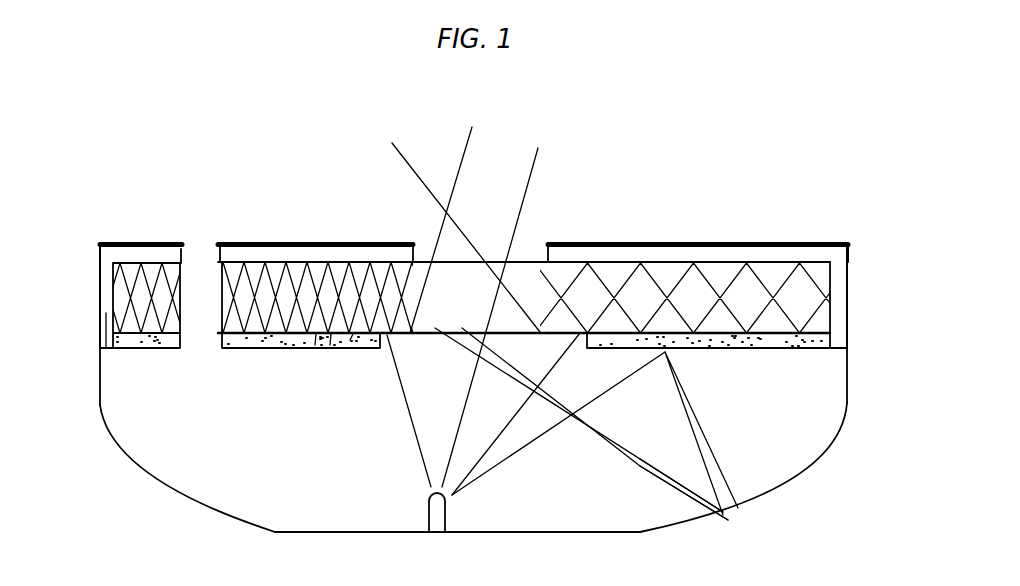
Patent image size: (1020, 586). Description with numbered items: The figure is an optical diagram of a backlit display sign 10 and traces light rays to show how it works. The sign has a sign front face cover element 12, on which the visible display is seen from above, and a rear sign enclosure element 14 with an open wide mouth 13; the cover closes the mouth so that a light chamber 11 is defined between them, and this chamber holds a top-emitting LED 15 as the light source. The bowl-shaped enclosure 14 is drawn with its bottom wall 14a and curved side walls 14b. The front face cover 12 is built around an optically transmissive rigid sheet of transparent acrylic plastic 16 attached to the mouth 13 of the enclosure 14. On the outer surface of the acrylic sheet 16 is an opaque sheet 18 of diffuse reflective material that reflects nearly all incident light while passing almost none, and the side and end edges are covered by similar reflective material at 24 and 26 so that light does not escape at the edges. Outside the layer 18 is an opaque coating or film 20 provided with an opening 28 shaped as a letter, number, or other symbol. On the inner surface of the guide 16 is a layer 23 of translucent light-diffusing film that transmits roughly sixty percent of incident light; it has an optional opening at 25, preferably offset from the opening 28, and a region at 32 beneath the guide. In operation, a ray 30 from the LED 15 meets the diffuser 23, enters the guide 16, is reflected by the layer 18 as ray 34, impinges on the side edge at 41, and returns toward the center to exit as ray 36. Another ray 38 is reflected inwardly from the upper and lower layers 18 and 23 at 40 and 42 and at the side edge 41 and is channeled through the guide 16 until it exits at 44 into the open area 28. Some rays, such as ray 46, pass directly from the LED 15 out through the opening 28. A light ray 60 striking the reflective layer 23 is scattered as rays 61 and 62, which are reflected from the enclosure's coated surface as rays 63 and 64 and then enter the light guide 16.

The backlit display sign 10 is at (853, 260).
The light chamber 11 is at (365, 503).
The sign front face cover element 12 is at (97, 247).
The open wide mouth 13 is at (853, 357).
The rear sign enclosure element 14 is at (478, 458).
The bottom wall 14a is at (232, 520).
The side wall 14b is at (80, 505).
The LED 15 is at (447, 513).
The transparent acrylic plastic sheet 16 is at (463, 311).
The opaque sheet of diffuse reflective material 18 is at (270, 258).
The opaque coating or film 20 is at (303, 245).
The translucent light diffusing plastic film 23 is at (290, 350).
The side edge reflective covering 24 is at (843, 300).
The optional opening 25 is at (578, 348).
The end edge reflective covering 26 is at (106, 340).
The opening 28 is at (548, 240).
The ray 30 is at (500, 430).
The bottom wall 32 is at (630, 345).
The ray 34 is at (727, 340).
The ray 36 is at (408, 157).
The ray 38 is at (405, 408).
The reflection point 40 is at (350, 340).
The side edge 41 is at (117, 293).
The reflection point 42 is at (358, 252).
The exit point 44 is at (463, 148).
The ray 46 is at (533, 177).
The light ray 60 is at (517, 450).
The scattered ray 61 is at (695, 443).
The scattered ray 62 is at (712, 445).
The reflected ray 63 is at (497, 370).
The reflected ray 64 is at (550, 392).